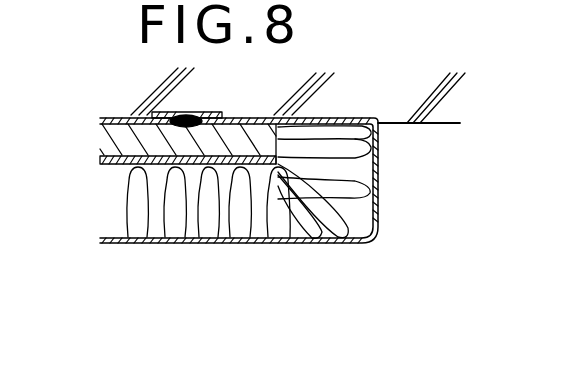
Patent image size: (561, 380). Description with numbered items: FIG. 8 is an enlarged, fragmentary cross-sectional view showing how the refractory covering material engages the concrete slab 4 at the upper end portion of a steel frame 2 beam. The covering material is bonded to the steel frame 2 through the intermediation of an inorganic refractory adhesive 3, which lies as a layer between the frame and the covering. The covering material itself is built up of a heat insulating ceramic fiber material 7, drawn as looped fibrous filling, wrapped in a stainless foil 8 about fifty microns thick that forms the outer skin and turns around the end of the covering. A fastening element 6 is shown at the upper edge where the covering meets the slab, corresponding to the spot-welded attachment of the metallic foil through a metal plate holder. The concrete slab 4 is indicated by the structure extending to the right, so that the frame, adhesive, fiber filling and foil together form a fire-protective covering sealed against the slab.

The steel frame 2 is at (127, 120).
The inorganic refractory adhesive 3 is at (158, 170).
The concrete slab 4 is at (402, 103).
The sealing connection member 6 is at (223, 110).
The heat insulating ceramic fiber material 7 is at (202, 208).
The stainless foil 8 is at (345, 245).